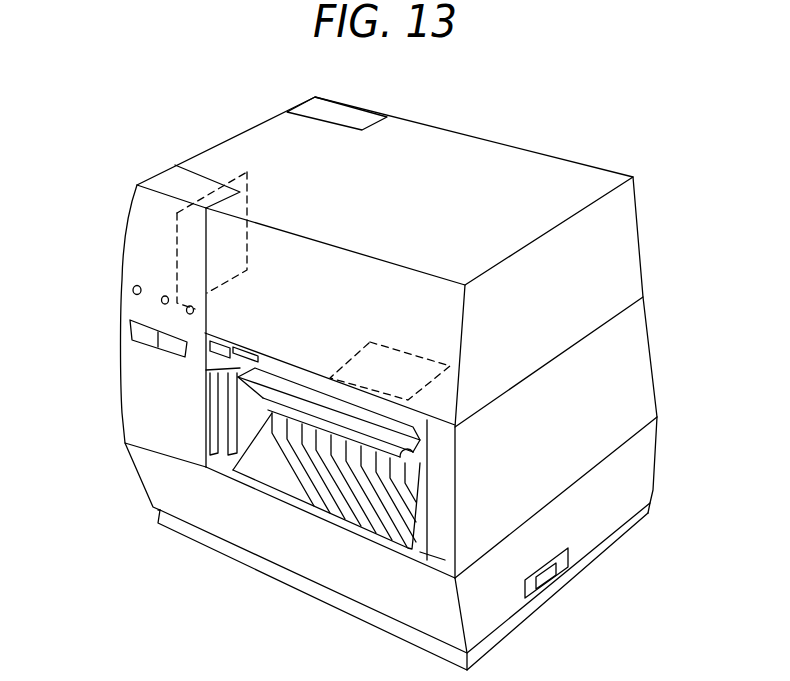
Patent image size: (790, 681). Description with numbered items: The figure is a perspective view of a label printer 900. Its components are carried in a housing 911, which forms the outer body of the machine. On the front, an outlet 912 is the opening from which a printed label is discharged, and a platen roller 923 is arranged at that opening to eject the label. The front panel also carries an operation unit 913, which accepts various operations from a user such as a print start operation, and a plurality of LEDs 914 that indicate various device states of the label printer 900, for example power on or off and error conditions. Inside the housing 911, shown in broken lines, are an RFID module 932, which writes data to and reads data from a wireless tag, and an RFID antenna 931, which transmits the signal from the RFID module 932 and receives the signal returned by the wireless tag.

The label printer 900 is at (706, 94).
The housing 911 is at (660, 433).
The outlet 912 is at (207, 363).
The operation unit 913 is at (131, 333).
The LED 914 is at (132, 290).
The platen roller 923 is at (405, 457).
The RFID antenna 931 is at (370, 342).
The RFID module 932 is at (248, 173).